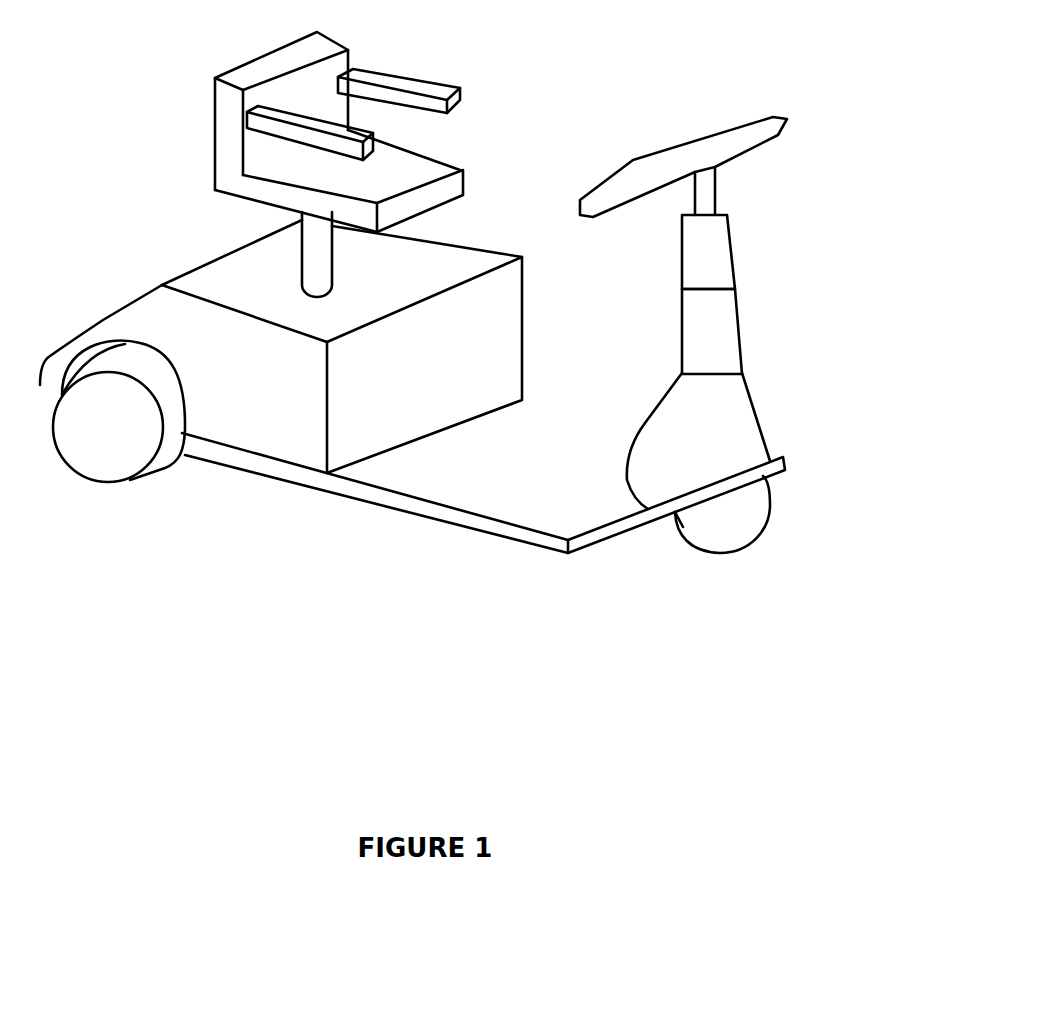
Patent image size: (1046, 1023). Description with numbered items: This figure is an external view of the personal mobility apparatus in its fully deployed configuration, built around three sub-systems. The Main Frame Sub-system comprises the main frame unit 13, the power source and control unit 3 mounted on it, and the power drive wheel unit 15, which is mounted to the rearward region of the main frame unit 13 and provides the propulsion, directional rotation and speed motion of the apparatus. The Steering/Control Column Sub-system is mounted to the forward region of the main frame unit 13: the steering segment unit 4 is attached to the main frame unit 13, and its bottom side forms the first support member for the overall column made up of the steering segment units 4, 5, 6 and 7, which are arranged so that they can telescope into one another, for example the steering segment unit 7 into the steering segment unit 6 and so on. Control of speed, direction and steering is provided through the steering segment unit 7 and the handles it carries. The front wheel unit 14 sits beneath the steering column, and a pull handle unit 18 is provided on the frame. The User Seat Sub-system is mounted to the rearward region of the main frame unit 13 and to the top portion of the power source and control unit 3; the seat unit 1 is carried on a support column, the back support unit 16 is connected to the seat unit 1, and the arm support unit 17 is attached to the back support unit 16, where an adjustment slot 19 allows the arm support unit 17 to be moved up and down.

The seat unit 1 is at (248, 208).
The power source and control unit 3 is at (262, 418).
The steering segment unit 4 is at (781, 422).
The steering segment unit 5 is at (757, 332).
The steering segment unit 6 is at (748, 233).
The steering segment unit 7 is at (732, 187).
The main frame unit 13 is at (473, 545).
The front wheel unit 14 is at (766, 553).
The power drive wheel unit 15 is at (139, 496).
The back support unit 16 is at (229, 54).
The arm support unit 17 is at (438, 72).
The pull handle unit 18 is at (668, 534).
The adjustment slot 19 is at (198, 137).